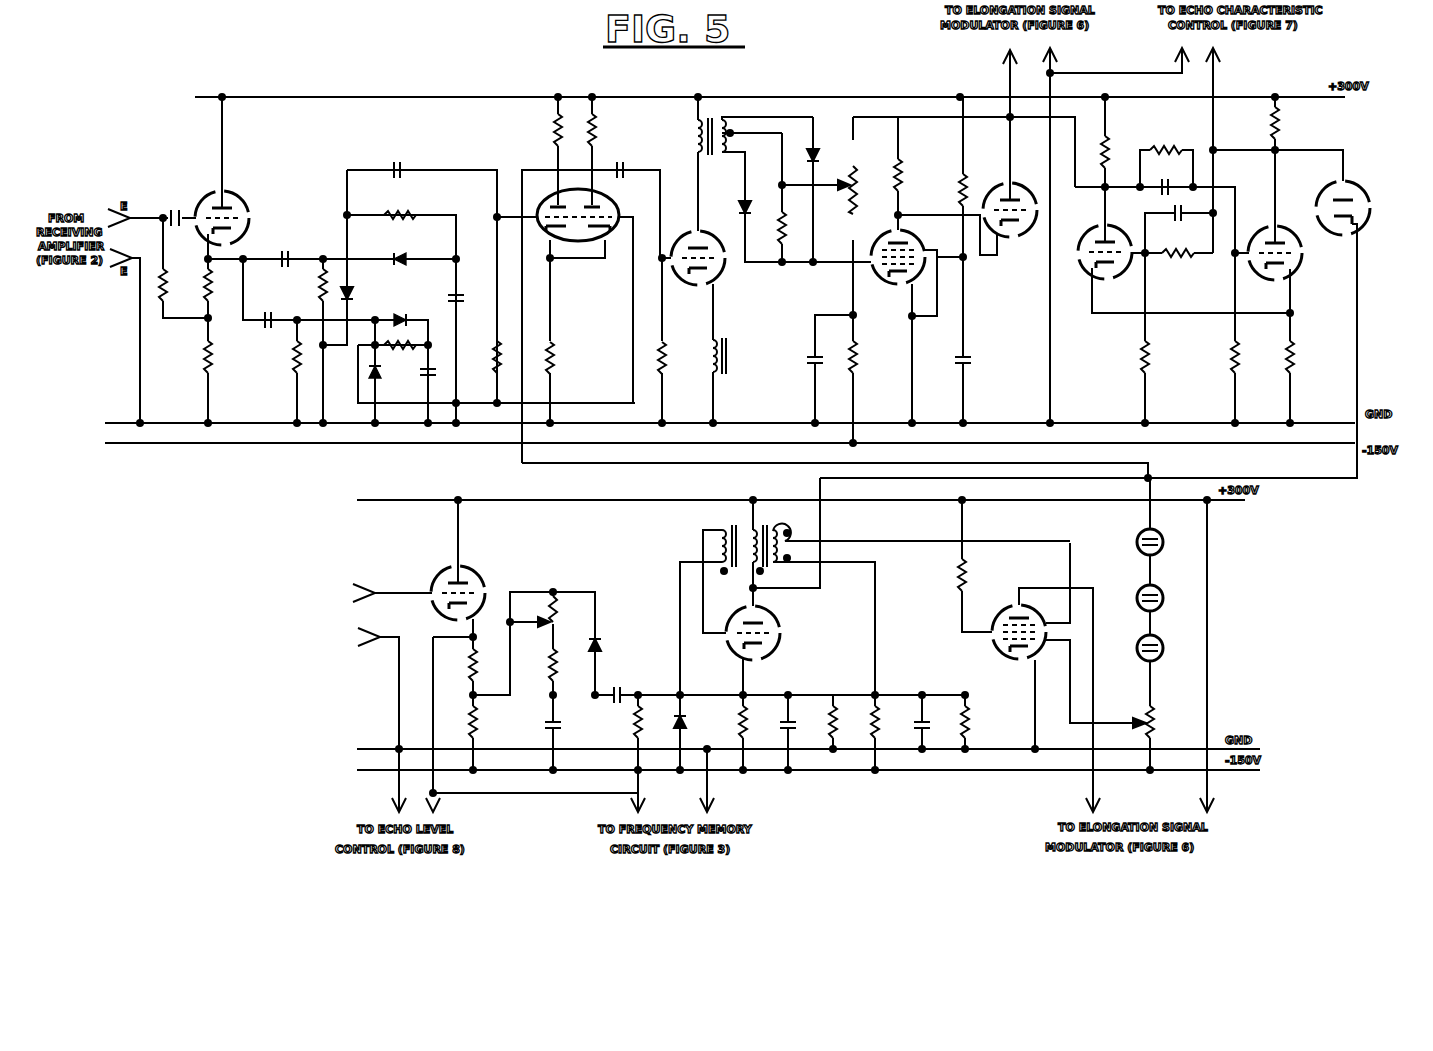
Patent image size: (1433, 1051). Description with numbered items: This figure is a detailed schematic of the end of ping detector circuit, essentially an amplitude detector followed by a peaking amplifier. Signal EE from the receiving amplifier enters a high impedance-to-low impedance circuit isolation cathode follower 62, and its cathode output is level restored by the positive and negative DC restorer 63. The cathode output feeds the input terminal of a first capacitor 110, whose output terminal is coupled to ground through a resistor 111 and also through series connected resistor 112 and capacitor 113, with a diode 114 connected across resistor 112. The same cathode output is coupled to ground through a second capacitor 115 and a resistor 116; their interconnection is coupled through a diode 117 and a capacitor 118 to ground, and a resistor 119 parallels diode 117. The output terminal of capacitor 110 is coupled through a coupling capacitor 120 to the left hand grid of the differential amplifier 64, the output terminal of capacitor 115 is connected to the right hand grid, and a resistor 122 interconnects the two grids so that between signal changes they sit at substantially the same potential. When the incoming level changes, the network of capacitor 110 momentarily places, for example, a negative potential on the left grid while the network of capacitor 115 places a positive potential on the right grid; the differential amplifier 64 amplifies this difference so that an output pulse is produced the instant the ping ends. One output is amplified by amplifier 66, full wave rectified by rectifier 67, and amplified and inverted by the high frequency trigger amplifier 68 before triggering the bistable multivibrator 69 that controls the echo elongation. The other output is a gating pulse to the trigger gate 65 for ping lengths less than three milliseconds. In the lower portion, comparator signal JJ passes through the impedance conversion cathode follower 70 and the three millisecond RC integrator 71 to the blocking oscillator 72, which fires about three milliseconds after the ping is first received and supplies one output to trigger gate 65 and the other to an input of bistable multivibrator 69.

The cathode follower 62 is at (190, 146).
The DC restorer 63 is at (410, 136).
The differential amplifier 64 is at (574, 93).
The trigger gate 65 is at (1082, 542).
The amplifier 66 is at (683, 146).
The rectifier 67 is at (841, 96).
The trigger amplifier 68 is at (946, 100).
The bistable multivibrator 69 is at (1292, 131).
The cathode follower 70 is at (412, 547).
The RC integrator 71 is at (567, 548).
The blocking oscillator 72 is at (768, 508).
The first capacitor 110 is at (286, 256).
The resistor 111 is at (318, 283).
The resistor 112 is at (397, 214).
The capacitor 113 is at (458, 296).
The diode 114 is at (401, 258).
The second capacitor 115 is at (269, 326).
The resistor 116 is at (294, 366).
The diode 117 is at (402, 306).
The capacitor 118 is at (425, 379).
The resistor 119 is at (379, 370).
The coupling capacitor 120 is at (397, 169).
The resistor 122 is at (495, 361).